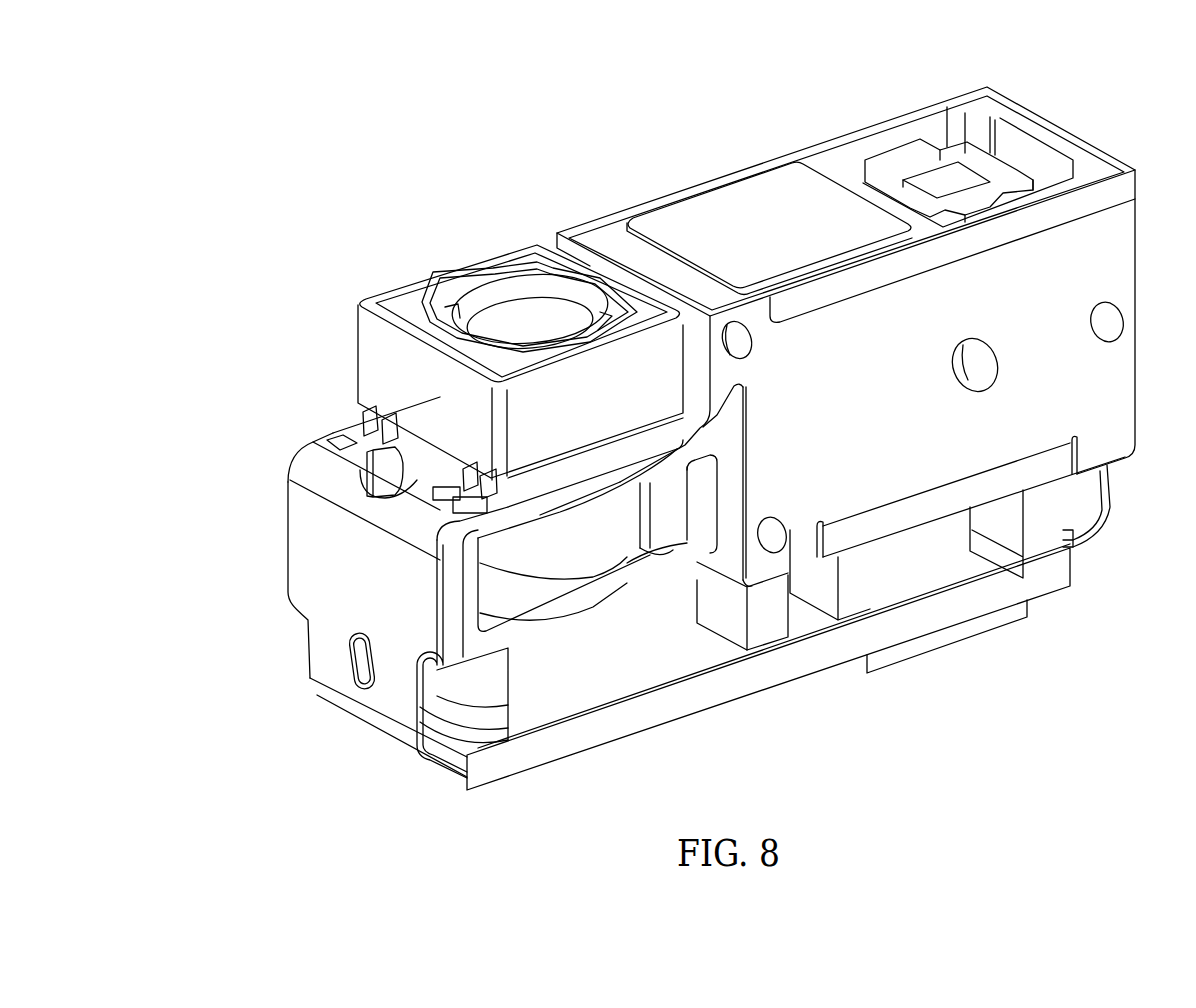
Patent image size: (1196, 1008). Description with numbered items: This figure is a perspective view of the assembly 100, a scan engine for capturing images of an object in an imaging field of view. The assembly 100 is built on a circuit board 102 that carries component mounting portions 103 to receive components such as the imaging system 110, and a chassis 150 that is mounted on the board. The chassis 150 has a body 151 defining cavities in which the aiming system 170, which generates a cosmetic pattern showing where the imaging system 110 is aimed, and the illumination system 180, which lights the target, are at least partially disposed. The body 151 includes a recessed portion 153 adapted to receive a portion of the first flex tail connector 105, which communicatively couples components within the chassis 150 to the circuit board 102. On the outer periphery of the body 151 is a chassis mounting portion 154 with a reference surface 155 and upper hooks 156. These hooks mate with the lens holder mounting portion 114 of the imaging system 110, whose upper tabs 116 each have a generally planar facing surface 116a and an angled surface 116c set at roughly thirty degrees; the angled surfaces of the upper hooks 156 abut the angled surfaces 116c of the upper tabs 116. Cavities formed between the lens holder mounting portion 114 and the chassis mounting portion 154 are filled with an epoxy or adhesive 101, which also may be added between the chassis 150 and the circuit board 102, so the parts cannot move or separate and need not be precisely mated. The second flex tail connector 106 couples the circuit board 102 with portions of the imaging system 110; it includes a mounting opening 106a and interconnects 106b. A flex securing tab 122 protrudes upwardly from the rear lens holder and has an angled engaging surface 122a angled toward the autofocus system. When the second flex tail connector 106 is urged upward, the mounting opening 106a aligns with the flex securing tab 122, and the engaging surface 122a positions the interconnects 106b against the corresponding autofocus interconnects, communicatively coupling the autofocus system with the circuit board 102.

The assembly 100 is at (240, 312).
The epoxy or adhesive 101 is at (775, 628).
The circuit board 102 is at (672, 717).
The component mounting portions 103 is at (493, 596).
The first flex tail connector 105 is at (1100, 522).
The second flex tail connector 106 is at (300, 575).
The mounting opening 106a is at (360, 478).
The interconnects 106b is at (345, 438).
The imaging system 110 is at (505, 592).
The lens holder mounting portion 114 is at (724, 438).
The upper tabs 116 is at (490, 703).
The facing surface 116a is at (517, 723).
The angled surface 116c is at (430, 695).
The flex securing tab 122 is at (374, 357).
The angled engaging surface 122a is at (363, 410).
The chassis 150 is at (1070, 150).
The body 151 is at (1058, 305).
The recessed portion 153 is at (1043, 440).
The chassis mounting portion 154 is at (768, 402).
The reference surface 155 is at (764, 506).
The upper hooks 156 is at (713, 397).
The aiming system 170 is at (944, 132).
The illumination system 180 is at (777, 188).